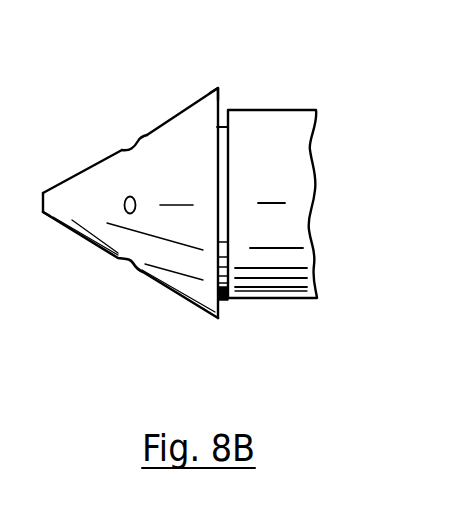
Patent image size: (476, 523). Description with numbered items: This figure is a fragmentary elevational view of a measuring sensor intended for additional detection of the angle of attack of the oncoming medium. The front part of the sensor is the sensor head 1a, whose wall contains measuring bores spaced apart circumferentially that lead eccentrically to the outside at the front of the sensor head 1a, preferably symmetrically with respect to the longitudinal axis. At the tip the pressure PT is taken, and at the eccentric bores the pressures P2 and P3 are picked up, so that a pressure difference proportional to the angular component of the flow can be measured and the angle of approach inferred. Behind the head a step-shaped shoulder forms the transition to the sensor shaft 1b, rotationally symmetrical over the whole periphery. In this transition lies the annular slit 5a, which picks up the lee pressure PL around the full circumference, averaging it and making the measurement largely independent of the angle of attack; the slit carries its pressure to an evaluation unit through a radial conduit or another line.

The sensor head 1a is at (172, 295).
The sensor shaft 1b is at (285, 301).
The annular slit 5a is at (223, 300).
The pressure P3 is at (131, 149).
The hole / point P2 is at (124, 204).
The lee pressure PL is at (218, 89).
The tip point PT is at (43, 211).